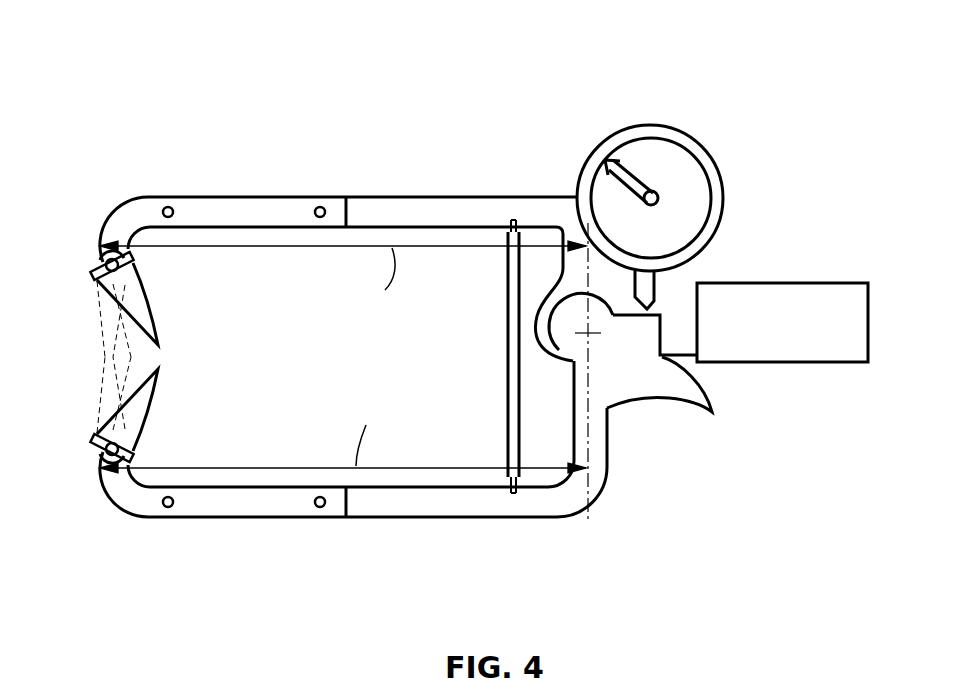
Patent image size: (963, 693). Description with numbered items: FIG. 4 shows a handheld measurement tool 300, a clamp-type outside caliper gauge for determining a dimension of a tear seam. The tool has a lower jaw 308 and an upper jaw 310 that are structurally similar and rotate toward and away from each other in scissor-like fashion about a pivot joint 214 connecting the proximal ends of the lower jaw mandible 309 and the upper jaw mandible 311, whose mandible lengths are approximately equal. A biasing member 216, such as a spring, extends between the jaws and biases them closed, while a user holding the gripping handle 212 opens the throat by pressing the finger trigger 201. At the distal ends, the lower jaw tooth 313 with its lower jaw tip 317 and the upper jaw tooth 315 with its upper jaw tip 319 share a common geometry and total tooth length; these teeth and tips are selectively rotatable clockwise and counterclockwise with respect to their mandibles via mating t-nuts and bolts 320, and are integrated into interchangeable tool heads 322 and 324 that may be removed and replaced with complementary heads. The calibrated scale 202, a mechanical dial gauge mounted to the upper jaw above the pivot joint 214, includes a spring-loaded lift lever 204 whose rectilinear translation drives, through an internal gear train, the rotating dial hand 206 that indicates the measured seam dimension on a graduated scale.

The measurement tool 300 is at (217, 48).
The upper jaw 310 is at (447, 177).
The upper jaw mandible 311 is at (403, 197).
The interchangeable tool head 324 is at (264, 197).
The upper jaw tooth 315 is at (98, 262).
The t-nuts and bolts 320 is at (130, 258).
The upper jaw tip 319 is at (153, 313).
The biasing member 216 is at (506, 393).
The lower jaw tip 317 is at (153, 401).
The lower jaw tooth 313 is at (98, 452).
The interchangeable tool head 322 is at (264, 517).
The lower jaw mandible 309 is at (403, 517).
The lower jaw 308 is at (446, 536).
The pivot joint 214 is at (562, 356).
The finger trigger 201 is at (694, 405).
The dial hand 206 is at (623, 166).
The calibrated scale 202 is at (718, 160).
The lift lever 204 is at (660, 285).
The gripping handle 212 is at (827, 283).